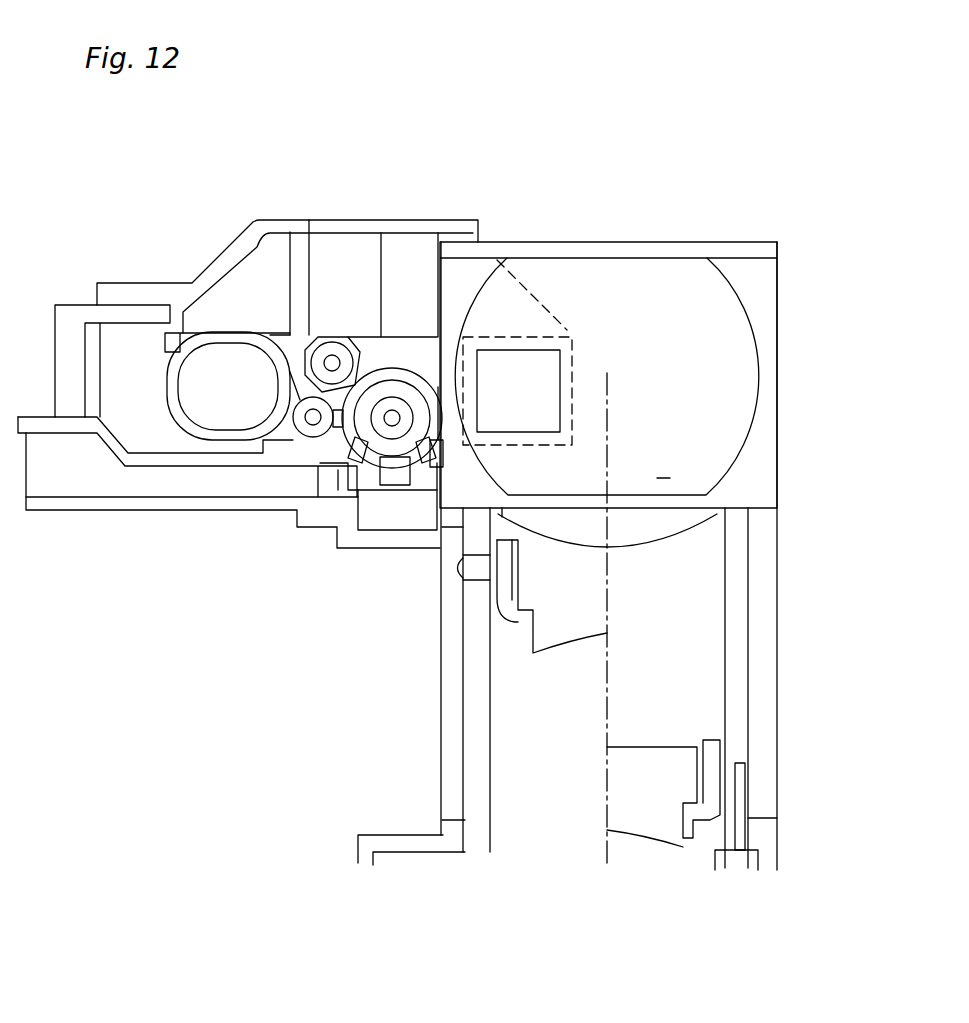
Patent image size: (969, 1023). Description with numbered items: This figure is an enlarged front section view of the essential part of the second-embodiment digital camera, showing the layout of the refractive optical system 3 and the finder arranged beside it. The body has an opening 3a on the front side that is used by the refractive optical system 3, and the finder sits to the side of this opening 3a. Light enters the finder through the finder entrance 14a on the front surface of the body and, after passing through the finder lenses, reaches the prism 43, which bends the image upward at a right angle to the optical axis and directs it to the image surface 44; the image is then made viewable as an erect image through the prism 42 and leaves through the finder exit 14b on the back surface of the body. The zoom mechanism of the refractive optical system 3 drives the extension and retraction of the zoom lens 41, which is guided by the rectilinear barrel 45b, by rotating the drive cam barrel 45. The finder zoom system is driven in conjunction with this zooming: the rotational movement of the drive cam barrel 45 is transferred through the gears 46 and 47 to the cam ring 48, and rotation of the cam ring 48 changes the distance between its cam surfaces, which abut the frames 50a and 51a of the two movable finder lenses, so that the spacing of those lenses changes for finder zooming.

The refractive optical system 3 is at (687, 617).
The opening 3a is at (698, 332).
The finder entrance 14a is at (210, 405).
The finder exit 14b is at (543, 370).
The zoom lens 41 is at (530, 594).
The prism 42 is at (415, 253).
The prism 43 is at (263, 267).
The image surface 44 is at (311, 340).
The drive cam barrel 45 is at (452, 648).
The rectilinear barrel 45b is at (465, 747).
The gear 46 is at (382, 517).
The gear 47 is at (355, 495).
The cam ring 48 is at (443, 335).
The frame 50a is at (293, 425).
The frame 51a is at (308, 340).